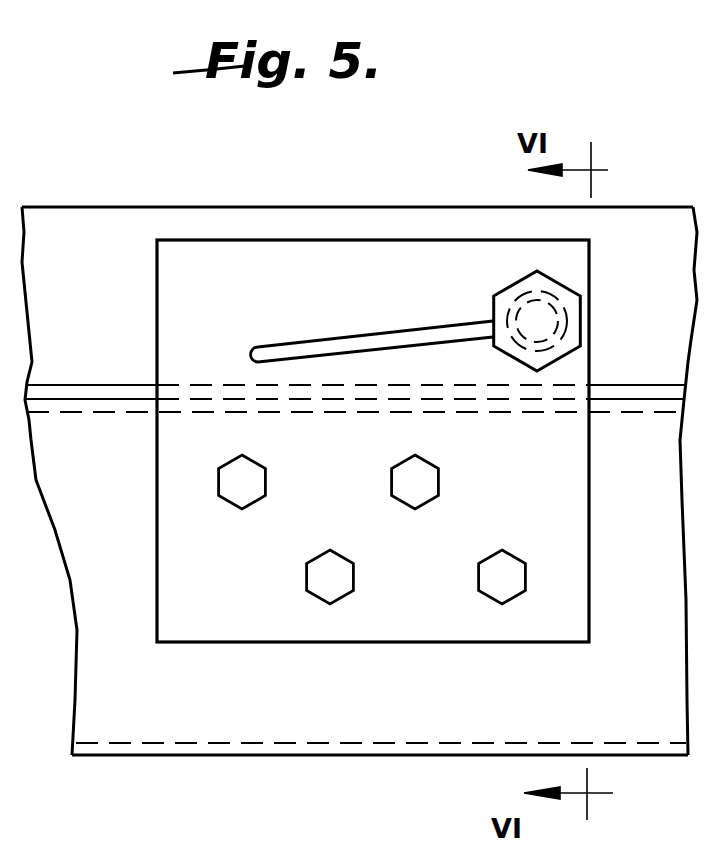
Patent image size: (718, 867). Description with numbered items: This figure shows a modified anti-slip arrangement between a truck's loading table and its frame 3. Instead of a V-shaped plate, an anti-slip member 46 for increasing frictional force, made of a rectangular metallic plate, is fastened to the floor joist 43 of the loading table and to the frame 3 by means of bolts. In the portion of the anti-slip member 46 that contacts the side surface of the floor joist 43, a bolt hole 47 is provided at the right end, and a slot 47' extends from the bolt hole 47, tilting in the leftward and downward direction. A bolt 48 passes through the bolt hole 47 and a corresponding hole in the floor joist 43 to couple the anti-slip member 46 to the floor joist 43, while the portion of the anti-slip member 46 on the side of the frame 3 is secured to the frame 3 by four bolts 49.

The frame 3 is at (166, 732).
The floor joist 43 is at (229, 193).
The anti-slip member 46 is at (332, 243).
The bolt hole 47 is at (513, 300).
The slot 47' is at (372, 325).
The bolt 48 is at (513, 352).
The bolts 49 is at (427, 493).